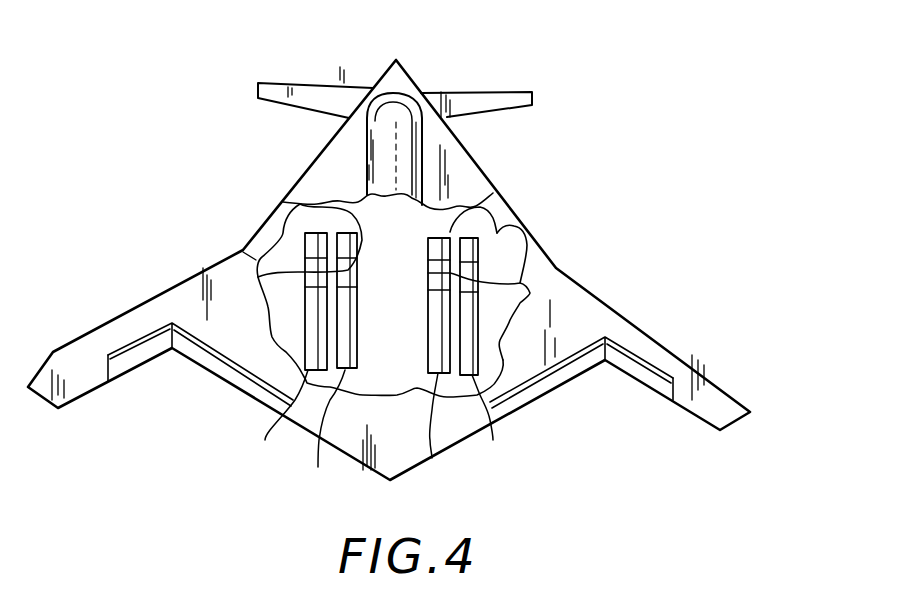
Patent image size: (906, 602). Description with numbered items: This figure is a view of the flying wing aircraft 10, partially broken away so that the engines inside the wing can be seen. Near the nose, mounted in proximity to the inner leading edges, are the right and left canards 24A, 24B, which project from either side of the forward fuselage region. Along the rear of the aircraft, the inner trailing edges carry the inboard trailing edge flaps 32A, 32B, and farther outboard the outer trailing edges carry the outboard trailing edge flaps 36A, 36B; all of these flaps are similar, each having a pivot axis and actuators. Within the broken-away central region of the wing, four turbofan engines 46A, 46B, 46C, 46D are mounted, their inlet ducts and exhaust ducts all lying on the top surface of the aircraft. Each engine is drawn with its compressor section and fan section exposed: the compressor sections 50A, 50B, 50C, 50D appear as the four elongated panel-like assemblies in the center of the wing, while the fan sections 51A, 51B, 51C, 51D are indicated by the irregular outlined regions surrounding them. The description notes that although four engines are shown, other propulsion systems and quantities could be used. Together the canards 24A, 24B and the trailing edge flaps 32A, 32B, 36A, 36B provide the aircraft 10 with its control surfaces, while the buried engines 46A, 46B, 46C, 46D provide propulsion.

The aircraft 10 is at (617, 113).
The right canard 24A is at (308, 83).
The left canard 24B is at (469, 90).
The inboard trailing edge flap 32A is at (230, 387).
The inboard trailing edge flap 32B is at (545, 393).
The outboard trailing edge flap 36A is at (135, 373).
The outboard trailing edge flap 36B is at (635, 380).
The turbofan engine 46A is at (274, 422).
The turbofan engine 46B is at (320, 438).
The turbofan engine 46C is at (443, 439).
The turbofan engine 46D is at (501, 427).
The compressor section 50A is at (243, 252).
The compressor section 50B is at (357, 271).
The compressor section 50C is at (428, 273).
The compressor section 50D is at (527, 282).
The fan section 51A is at (270, 225).
The fan section 51B is at (290, 202).
The fan section 51C is at (493, 193).
The fan section 51D is at (513, 228).